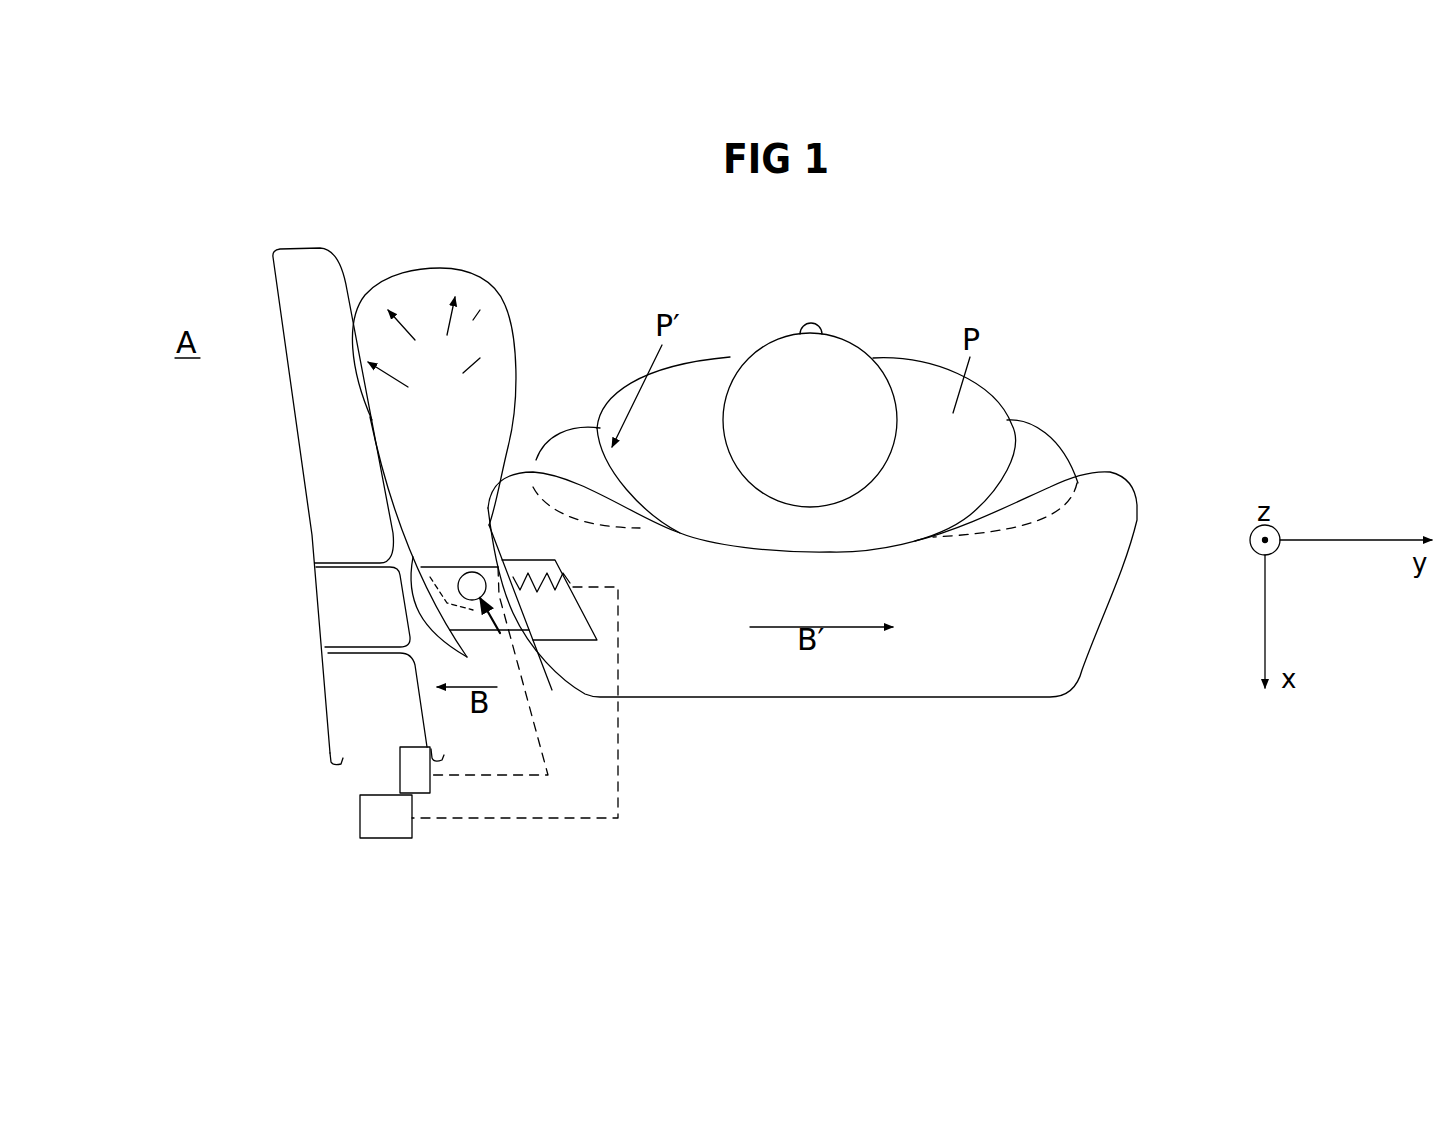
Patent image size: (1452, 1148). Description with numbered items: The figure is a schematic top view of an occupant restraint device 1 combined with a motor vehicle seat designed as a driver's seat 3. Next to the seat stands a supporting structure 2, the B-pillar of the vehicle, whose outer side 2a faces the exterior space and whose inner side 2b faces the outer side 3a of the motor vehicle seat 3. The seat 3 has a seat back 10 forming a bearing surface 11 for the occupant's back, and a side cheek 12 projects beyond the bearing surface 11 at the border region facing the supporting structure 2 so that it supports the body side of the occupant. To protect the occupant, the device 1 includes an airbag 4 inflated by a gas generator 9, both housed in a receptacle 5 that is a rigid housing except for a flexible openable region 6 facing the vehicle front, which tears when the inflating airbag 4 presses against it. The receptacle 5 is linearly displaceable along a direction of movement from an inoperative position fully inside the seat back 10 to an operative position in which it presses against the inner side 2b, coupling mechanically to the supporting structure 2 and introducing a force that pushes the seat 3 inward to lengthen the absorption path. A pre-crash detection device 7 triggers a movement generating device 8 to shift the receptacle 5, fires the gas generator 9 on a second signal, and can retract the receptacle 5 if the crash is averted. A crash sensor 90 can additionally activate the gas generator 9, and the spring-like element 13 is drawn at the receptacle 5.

The occupant restraint device 1 is at (419, 222).
The supporting structure 2 is at (343, 623).
The outer side 2a is at (320, 623).
The inner side 2b is at (407, 617).
The driver's seat 3 is at (950, 680).
The outer side of the motor vehicle seat 3a is at (487, 520).
The airbag 4 is at (490, 298).
The receptacle 5 is at (503, 655).
The openable region 6 is at (458, 558).
The pre-crash detection device 7 is at (383, 818).
The movement generating device 8 is at (529, 558).
The gas generator 9 is at (527, 621).
The seat back 10 is at (987, 630).
The bearing surface 11 is at (915, 553).
The side cheek 12 is at (518, 487).
The spring housing 13 is at (552, 580).
The crash sensor 90 is at (400, 770).